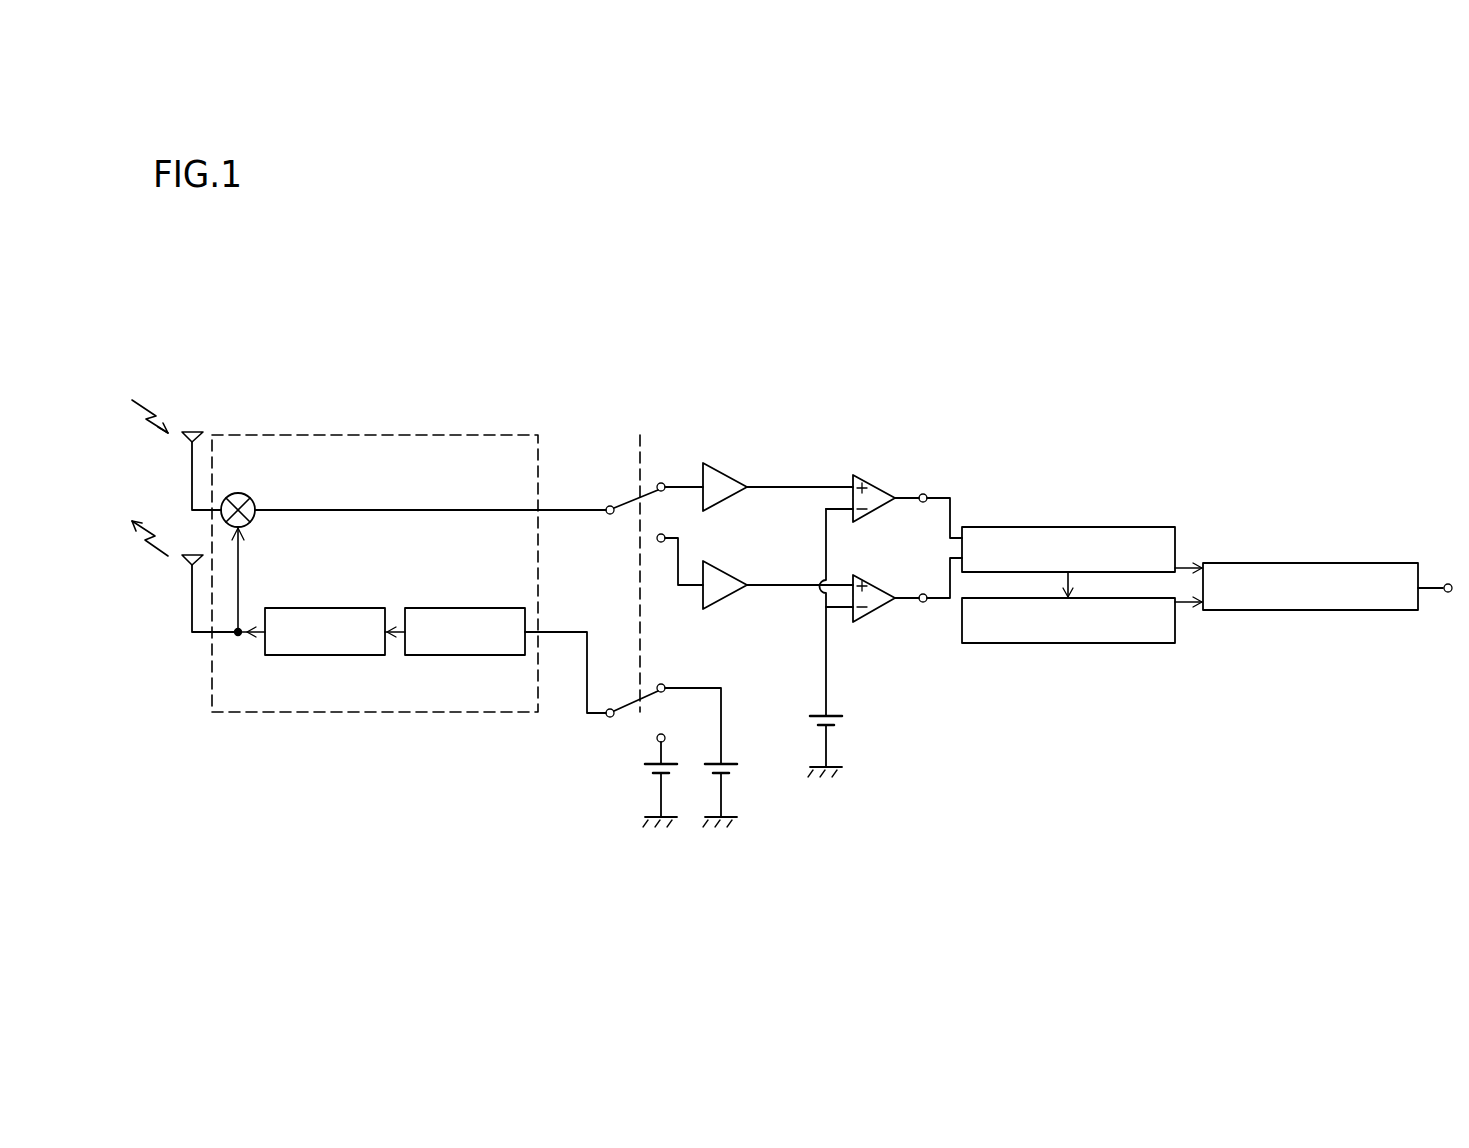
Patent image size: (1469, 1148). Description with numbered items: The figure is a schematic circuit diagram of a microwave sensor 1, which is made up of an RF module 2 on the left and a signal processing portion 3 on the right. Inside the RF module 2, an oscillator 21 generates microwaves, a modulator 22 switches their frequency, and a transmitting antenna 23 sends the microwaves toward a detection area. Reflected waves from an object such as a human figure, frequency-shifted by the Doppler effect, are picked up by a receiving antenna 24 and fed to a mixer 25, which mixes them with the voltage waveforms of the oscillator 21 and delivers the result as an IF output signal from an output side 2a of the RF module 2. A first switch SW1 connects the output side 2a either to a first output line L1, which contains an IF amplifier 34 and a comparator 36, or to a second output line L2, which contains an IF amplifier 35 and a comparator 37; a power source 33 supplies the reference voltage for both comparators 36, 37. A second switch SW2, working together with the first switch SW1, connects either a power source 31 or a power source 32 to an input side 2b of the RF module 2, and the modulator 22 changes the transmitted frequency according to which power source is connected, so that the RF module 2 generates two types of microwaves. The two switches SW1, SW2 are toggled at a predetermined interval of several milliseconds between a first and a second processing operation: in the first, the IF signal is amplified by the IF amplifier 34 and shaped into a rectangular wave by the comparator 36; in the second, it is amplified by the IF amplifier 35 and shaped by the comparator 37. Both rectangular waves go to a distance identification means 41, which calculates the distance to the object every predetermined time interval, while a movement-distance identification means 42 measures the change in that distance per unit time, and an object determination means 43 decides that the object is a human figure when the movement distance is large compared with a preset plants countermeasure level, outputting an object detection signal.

The microwave sensor 1 is at (161, 273).
The RF module 2 is at (441, 433).
The output side 2a is at (545, 513).
The input side 2b is at (548, 631).
The signal processing portion 3 is at (700, 378).
The oscillator 21 is at (336, 607).
The modulator 22 is at (499, 607).
The transmitting antenna 23 is at (187, 567).
The receiving antenna 24 is at (196, 430).
The mixer 25 is at (251, 497).
The power source 31 is at (735, 762).
The power source 32 is at (646, 754).
The power source 33 is at (838, 708).
The IF amplifier 34 is at (718, 462).
The IF amplifier 35 is at (730, 609).
The comparator 36 is at (870, 473).
The comparator 37 is at (873, 625).
The distance identification means 41 is at (1008, 526).
The movement-distance identification means 42 is at (1006, 644).
The object determination means 43 is at (1350, 562).
The first switch SW1 is at (611, 506).
The second switch SW2 is at (630, 712).
The first output line L1 is at (797, 484).
The second output line L2 is at (786, 583).